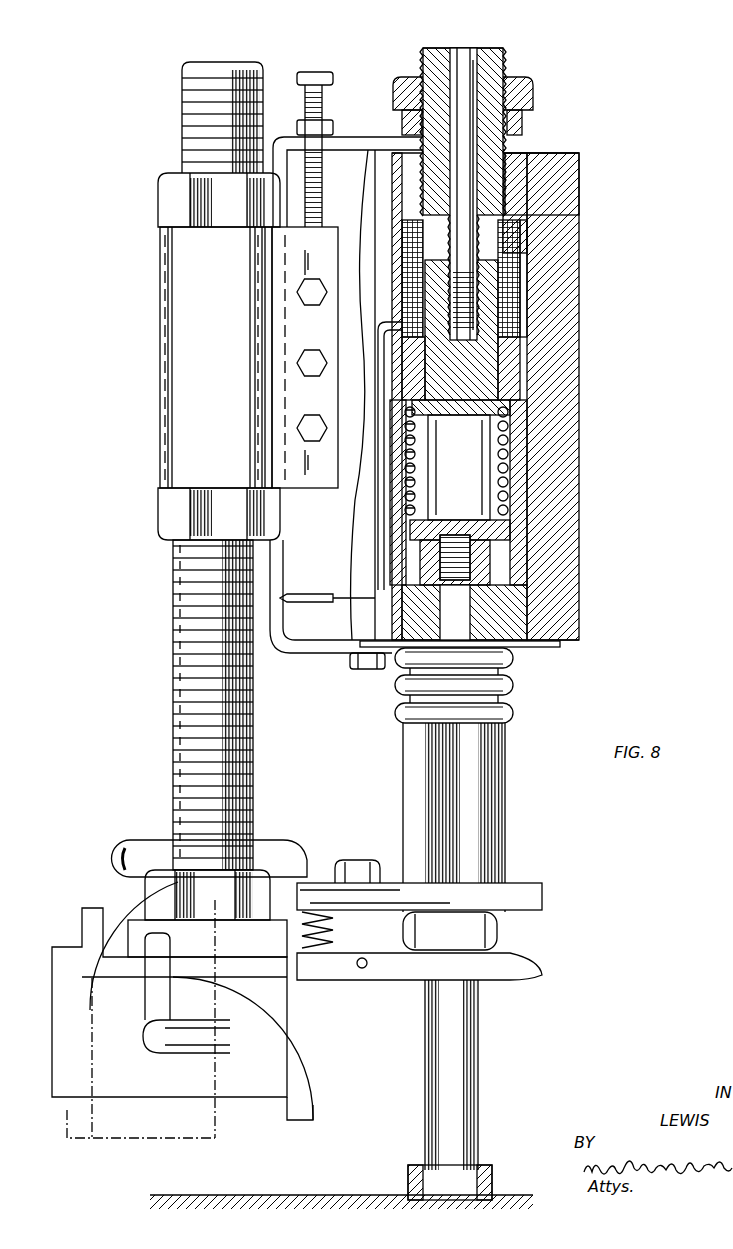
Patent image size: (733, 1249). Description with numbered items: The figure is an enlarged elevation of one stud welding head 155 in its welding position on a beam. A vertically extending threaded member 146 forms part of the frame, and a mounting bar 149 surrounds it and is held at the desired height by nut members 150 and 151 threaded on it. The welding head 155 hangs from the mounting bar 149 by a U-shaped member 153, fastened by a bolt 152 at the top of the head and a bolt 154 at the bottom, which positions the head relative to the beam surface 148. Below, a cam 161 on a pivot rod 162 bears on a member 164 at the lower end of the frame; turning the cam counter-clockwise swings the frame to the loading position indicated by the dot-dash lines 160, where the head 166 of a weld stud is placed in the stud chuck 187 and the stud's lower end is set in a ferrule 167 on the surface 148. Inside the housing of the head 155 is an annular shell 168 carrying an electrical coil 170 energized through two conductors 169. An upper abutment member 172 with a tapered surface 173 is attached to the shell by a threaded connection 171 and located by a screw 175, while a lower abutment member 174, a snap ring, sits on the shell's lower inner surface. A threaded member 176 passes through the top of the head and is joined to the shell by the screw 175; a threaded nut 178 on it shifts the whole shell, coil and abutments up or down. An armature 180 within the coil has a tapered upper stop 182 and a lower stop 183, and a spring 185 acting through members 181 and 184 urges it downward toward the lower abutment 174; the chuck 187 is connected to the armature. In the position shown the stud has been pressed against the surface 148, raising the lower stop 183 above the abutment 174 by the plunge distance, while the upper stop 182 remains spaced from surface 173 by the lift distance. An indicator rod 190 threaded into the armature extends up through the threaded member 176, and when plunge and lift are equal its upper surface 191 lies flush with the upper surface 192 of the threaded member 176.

The threaded member 146 is at (175, 615).
The beam surface 148 is at (195, 1195).
The mounting bar 149 is at (320, 410).
The nut member 150 is at (160, 210).
The nut member 151 is at (160, 510).
The bolt 152 is at (370, 120).
The U-shaped member 153 is at (270, 642).
The bolt 154 is at (360, 670).
The welding head 155 is at (579, 493).
The dot-dash position 160 is at (118, 905).
The cam 161 is at (290, 1050).
The pivot rod 162 is at (158, 1045).
The member 164 is at (257, 945).
The head of weld stud 166 is at (495, 928).
The ferrule 167 is at (492, 1190).
The annular shell 168 is at (560, 263).
The conductors 169 is at (305, 593).
The electrical coil 170 is at (560, 300).
The threaded connection 171 is at (579, 220).
The upper abutment member 172 is at (578, 284).
The tapered surface 173 is at (578, 323).
The lower abutment member 174 is at (560, 568).
The screw 175 is at (376, 205).
The threaded member 176 is at (430, 82).
The threaded nut 178 is at (535, 97).
The armature 180 is at (467, 450).
The member 181 is at (578, 378).
The upper stop 182 is at (578, 338).
The lower stop 183 is at (578, 548).
The member 184 is at (560, 535).
The spring 185 is at (497, 484).
The stud chuck 187 is at (545, 893).
The indicator rod 190 is at (466, 90).
The upper surface of indicator rod 191 is at (462, 47).
The upper surface of threaded member 192 is at (437, 47).